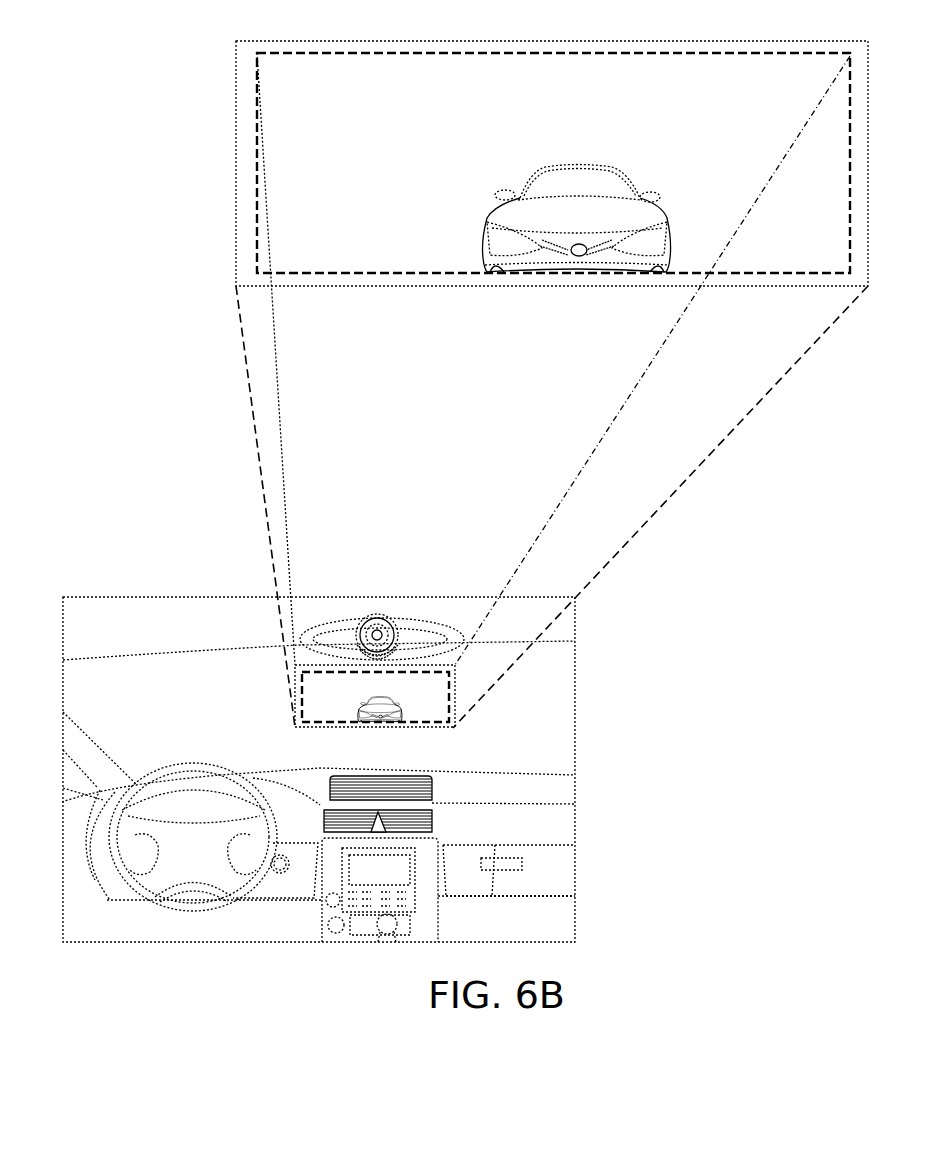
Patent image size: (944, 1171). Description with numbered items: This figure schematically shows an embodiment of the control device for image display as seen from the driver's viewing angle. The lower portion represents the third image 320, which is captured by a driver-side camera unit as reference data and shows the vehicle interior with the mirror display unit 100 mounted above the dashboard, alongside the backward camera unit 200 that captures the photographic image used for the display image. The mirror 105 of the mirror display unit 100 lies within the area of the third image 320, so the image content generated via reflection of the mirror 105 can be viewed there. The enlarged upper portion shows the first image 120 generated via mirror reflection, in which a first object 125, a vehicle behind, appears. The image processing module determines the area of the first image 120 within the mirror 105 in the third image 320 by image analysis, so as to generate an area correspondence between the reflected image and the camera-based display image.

The mirror display unit 100 is at (367, 31).
The first image 120 is at (326, 88).
The mirror 105 is at (248, 153).
The first object 125 is at (604, 227).
The backward camera unit 200 is at (378, 627).
The third image 320 is at (146, 586).